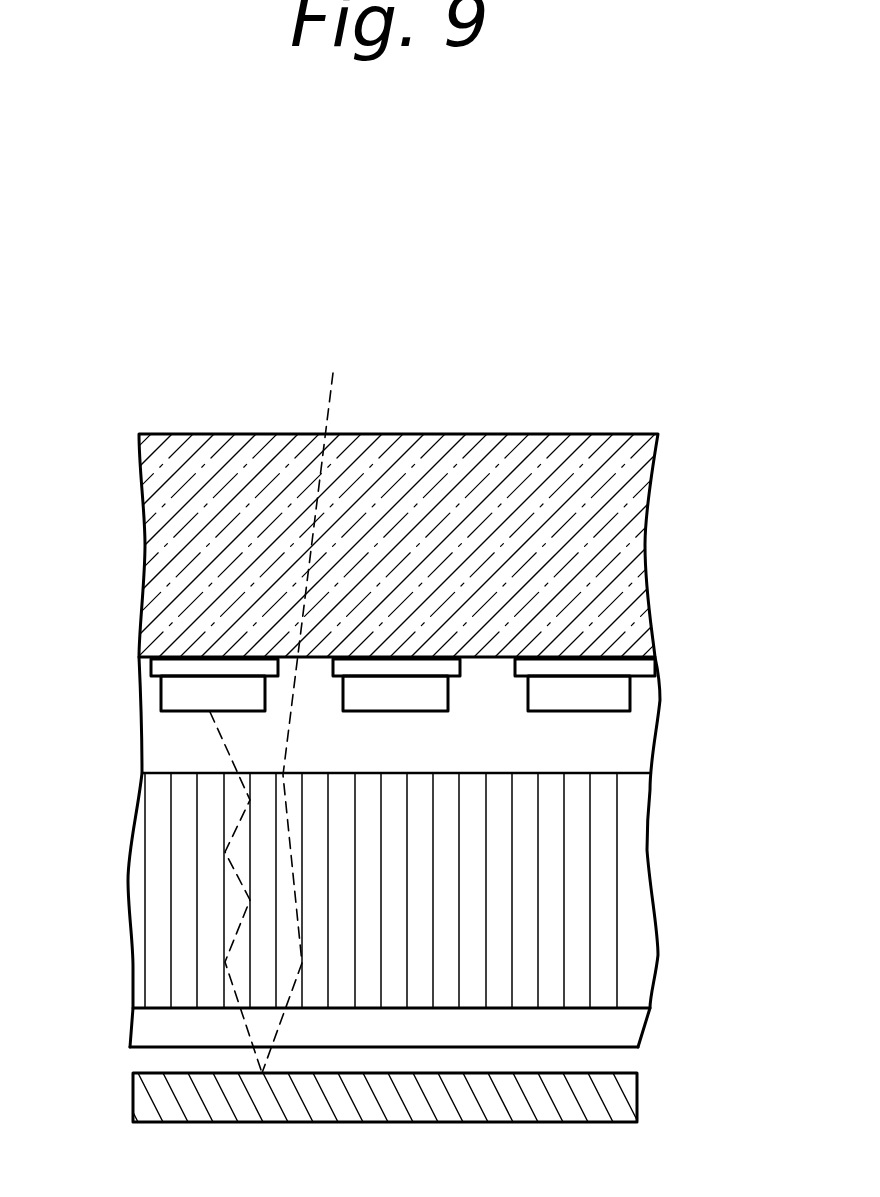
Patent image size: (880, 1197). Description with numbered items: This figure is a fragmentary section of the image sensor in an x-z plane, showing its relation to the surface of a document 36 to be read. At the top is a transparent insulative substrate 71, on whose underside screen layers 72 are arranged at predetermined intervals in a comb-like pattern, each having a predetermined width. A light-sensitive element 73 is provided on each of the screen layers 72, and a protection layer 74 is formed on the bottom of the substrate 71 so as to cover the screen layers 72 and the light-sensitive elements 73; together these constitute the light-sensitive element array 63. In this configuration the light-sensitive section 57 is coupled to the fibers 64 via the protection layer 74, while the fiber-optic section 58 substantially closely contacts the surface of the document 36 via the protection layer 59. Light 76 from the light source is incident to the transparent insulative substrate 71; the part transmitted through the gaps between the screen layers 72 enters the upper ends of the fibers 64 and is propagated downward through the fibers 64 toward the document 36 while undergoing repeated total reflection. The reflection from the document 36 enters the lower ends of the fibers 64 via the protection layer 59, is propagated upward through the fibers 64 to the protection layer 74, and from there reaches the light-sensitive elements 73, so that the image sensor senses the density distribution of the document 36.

The document 36 is at (633, 1097).
The light-sensitive section 57 is at (572, 522).
The fiber-optic section 58 is at (665, 843).
The protection layer 59 is at (620, 1028).
The light-sensitive element array 63 is at (123, 653).
The fibers 64 is at (590, 880).
The transparent insulative substrate 71 is at (683, 452).
The screen layers 72 is at (630, 663).
The light-sensitive element 73 is at (613, 697).
The protection layer 74 is at (622, 753).
The light 76 is at (335, 407).